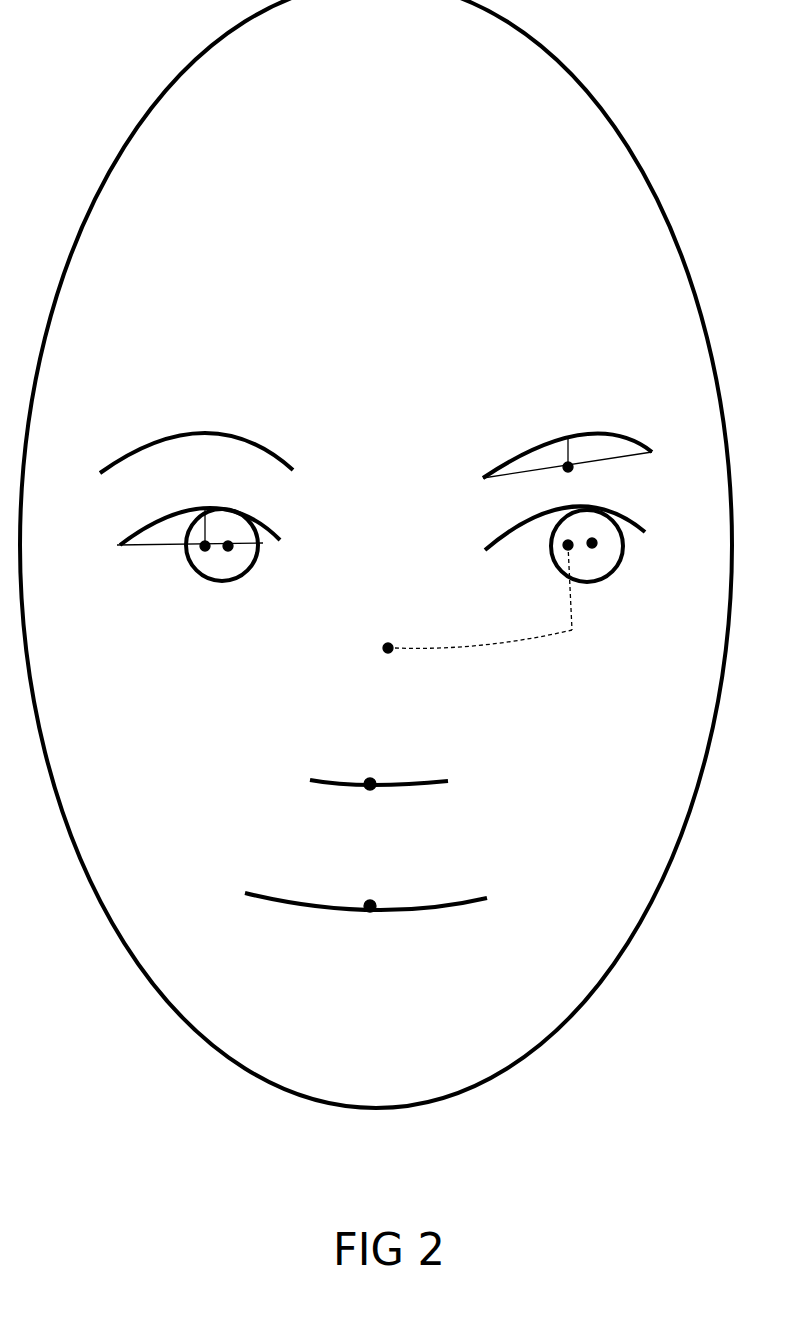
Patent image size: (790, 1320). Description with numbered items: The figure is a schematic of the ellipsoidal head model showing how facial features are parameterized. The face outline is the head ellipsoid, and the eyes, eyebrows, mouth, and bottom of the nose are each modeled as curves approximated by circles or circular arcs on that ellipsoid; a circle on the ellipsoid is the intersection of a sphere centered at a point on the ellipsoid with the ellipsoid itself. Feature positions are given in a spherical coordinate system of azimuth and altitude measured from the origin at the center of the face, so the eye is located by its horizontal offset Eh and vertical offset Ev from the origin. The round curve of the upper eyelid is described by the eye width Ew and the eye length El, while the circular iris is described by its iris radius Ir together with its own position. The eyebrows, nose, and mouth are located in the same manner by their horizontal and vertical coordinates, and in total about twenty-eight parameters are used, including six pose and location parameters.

The eye width parameter Ew is at (205, 530).
The eye length parameter El is at (157, 545).
The iris radius parameter Ir is at (210, 557).
The eye horizontal position parameter Eh is at (483, 636).
The eye vertical position parameter Ev is at (568, 587).
The element origin is at (385, 668).